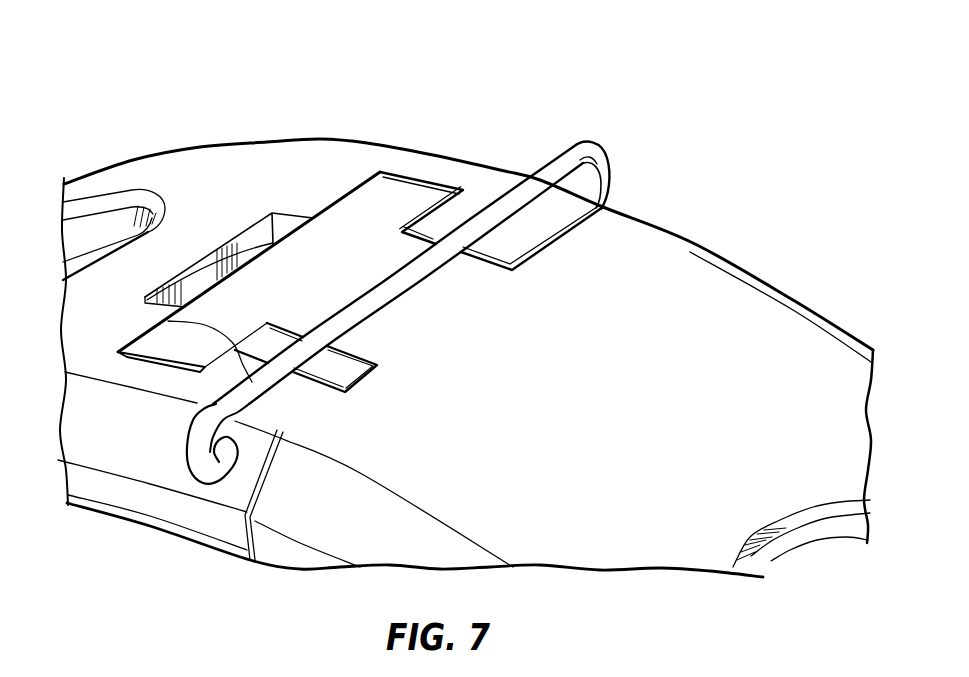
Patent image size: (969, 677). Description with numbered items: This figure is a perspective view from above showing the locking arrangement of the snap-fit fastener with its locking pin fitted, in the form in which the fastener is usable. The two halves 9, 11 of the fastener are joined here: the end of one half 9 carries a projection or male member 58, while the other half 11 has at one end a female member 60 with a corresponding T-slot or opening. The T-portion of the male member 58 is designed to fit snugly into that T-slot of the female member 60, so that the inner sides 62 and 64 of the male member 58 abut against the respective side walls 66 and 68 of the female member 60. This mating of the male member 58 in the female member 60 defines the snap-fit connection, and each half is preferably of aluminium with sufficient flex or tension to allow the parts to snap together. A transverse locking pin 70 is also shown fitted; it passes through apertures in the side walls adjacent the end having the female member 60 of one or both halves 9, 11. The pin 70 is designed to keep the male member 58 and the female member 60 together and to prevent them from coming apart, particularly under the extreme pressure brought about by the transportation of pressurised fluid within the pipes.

The half 9 is at (695, 243).
The half 11 is at (150, 151).
The male member 58 is at (457, 337).
The female member 60 is at (240, 253).
The inner side 62 is at (425, 208).
The inner side 64 is at (168, 321).
The side wall 66 is at (462, 201).
The side wall 68 is at (340, 392).
The transverse locking pin 70 is at (590, 143).